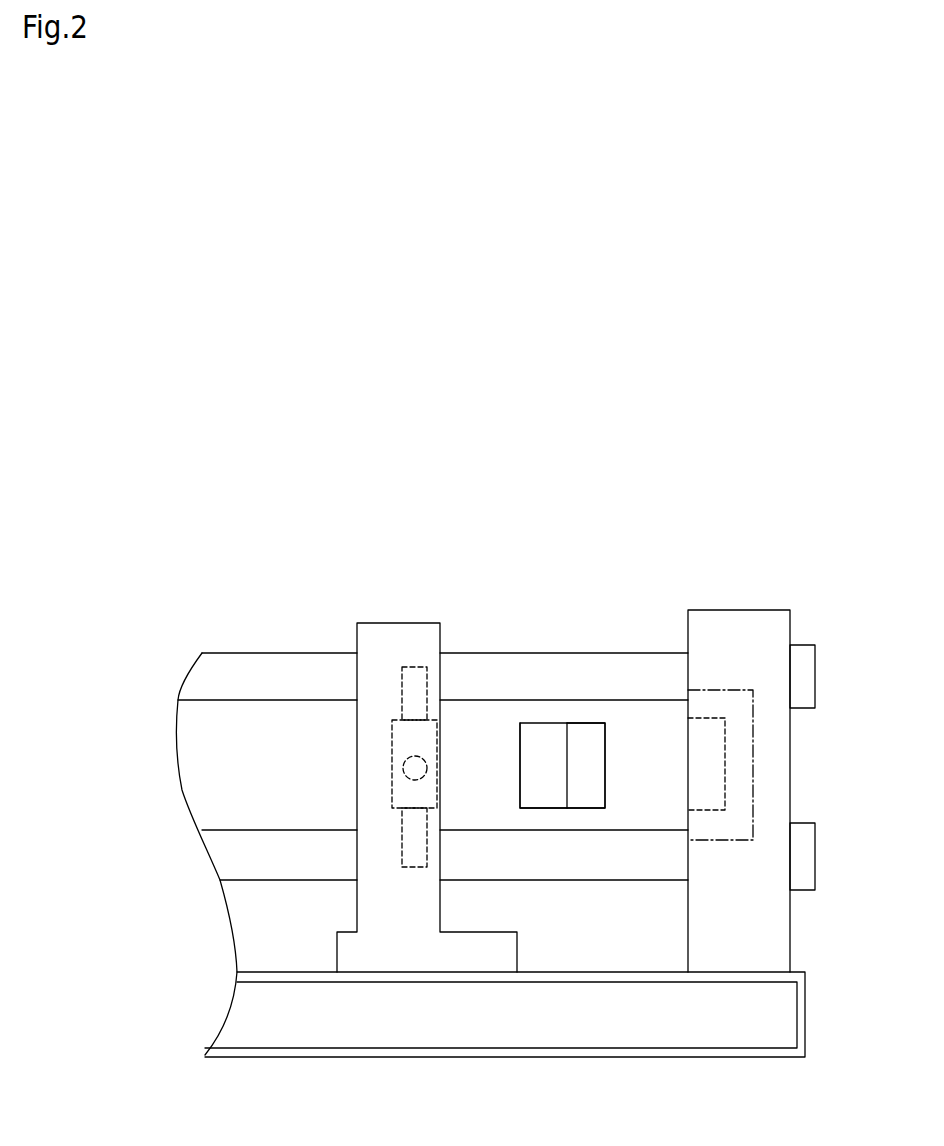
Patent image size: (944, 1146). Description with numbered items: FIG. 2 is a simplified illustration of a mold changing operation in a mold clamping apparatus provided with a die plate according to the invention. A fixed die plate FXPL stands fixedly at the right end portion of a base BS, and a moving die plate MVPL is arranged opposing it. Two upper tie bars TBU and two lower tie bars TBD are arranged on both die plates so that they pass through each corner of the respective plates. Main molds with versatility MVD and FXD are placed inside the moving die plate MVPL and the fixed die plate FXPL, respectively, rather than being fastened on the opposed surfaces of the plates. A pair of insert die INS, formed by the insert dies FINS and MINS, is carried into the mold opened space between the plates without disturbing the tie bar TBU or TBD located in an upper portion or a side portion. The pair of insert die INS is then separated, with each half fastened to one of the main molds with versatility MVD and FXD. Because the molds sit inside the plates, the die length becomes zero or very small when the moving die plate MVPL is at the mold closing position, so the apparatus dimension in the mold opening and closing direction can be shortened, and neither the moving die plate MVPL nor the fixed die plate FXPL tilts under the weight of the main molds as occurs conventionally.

The base BS is at (242, 1015).
The upper tie bar TBU is at (567, 653).
The lower tie bar TBD is at (607, 883).
The moving die plate MVPL is at (412, 623).
The main mold with versatility MVD is at (387, 750).
The insert die INS is at (540, 810).
The insert die MINS is at (518, 743).
The insert die FINS is at (609, 743).
The fixed die plate FXPL is at (745, 610).
The main mold with versatility FXD is at (757, 777).